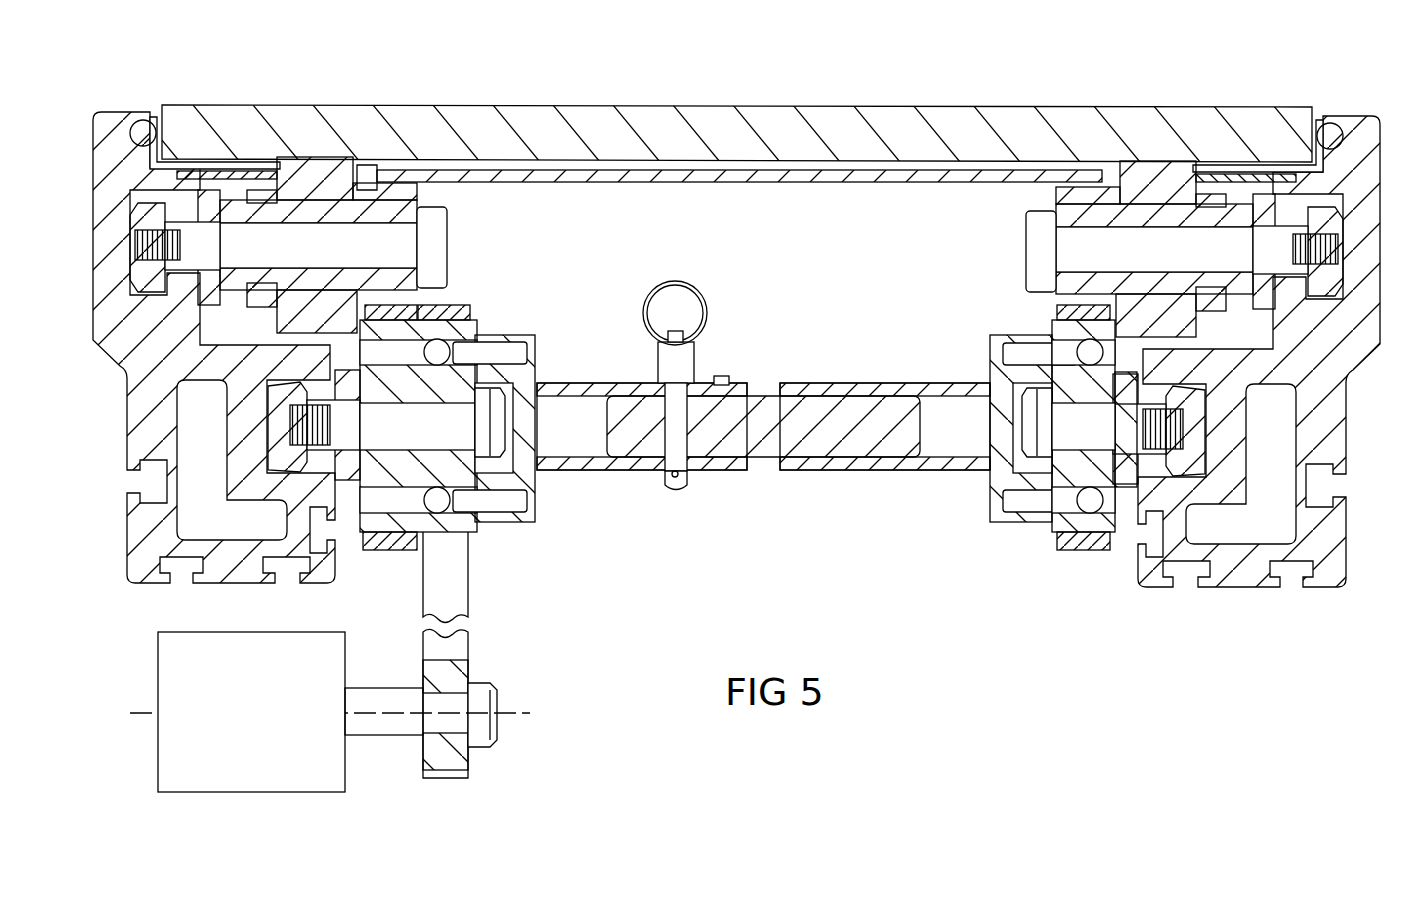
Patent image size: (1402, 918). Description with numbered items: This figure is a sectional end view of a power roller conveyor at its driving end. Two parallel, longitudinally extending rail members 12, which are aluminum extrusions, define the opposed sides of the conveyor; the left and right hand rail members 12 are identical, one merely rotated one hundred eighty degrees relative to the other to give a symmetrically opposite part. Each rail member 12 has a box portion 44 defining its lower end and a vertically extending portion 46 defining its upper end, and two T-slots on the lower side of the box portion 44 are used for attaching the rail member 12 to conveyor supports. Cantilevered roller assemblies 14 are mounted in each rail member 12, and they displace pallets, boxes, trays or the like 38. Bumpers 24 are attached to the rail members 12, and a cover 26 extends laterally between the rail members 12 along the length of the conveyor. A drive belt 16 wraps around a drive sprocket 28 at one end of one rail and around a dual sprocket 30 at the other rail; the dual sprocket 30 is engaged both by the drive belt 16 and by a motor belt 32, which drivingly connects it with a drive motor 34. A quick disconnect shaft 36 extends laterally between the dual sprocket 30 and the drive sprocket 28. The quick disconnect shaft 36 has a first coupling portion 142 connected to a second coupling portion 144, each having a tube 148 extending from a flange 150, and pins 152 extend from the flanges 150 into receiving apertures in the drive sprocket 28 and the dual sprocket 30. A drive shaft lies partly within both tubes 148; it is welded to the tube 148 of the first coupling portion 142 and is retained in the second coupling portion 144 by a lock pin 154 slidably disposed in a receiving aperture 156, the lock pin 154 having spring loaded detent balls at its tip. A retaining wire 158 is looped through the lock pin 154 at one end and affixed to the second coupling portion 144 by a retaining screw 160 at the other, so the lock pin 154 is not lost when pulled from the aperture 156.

The rail member 12 is at (110, 96).
The roller assembly 14 is at (360, 160).
The drive belt 16 is at (390, 552).
The bumper 24 is at (163, 116).
The cover 26 is at (668, 184).
The drive sprocket 28 is at (1052, 536).
The dual sprocket 30 is at (448, 431).
The motor belt 32 is at (468, 600).
The drive motor 34 is at (348, 778).
The quick disconnect shaft 36 is at (763, 408).
The pallet, box, tray or the like 38 is at (1030, 104).
The box portion 44 is at (127, 425).
The vertically extending portion 46 is at (94, 328).
The first coupling portion 142 is at (886, 383).
The second coupling portion 144 is at (568, 384).
The tube 148 is at (613, 472).
The flange 150 is at (515, 522).
The pin 152 is at (510, 335).
The lock pin 154 is at (671, 435).
The receiving aperture 156 is at (692, 478).
The retaining wire 158 is at (706, 326).
The retaining screw 160 is at (726, 376).